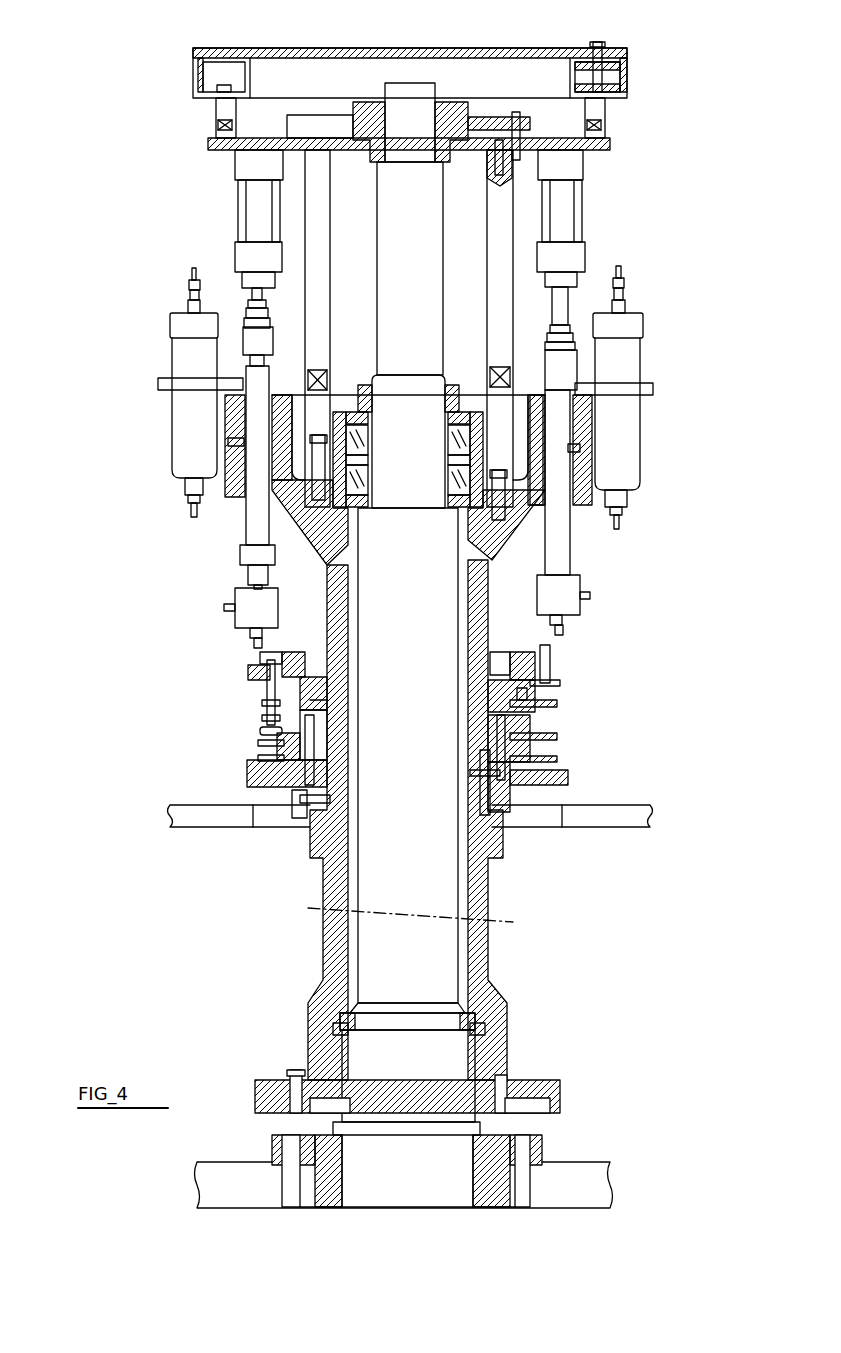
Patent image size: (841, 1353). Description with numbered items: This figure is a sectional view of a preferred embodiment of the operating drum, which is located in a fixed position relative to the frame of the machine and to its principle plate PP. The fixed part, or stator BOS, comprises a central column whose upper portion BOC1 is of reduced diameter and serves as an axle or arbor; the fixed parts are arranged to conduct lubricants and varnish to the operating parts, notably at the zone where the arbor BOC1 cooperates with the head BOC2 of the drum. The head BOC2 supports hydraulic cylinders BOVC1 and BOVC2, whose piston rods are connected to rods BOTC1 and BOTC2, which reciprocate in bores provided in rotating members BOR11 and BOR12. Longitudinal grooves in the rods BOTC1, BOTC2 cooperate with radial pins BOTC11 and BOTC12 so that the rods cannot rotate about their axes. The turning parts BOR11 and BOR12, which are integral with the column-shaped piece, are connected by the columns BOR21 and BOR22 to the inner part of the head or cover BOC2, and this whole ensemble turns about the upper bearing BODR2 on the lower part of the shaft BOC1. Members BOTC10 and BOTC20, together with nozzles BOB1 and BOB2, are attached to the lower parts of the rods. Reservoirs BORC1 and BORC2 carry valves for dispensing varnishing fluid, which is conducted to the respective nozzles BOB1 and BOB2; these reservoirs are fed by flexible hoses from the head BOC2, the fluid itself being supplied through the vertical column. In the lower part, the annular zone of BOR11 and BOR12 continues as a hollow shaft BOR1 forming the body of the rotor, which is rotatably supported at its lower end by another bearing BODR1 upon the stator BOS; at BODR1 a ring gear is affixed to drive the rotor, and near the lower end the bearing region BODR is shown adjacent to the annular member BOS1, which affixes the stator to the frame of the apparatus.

The head BOC2 is at (340, 70).
The upper portion of central column BOC1 is at (430, 237).
The hydraulic cylinder BOVC1 is at (257, 208).
The hydraulic cylinder BOVC2 is at (560, 203).
The column BOR21 is at (190, 293).
The column BOR22 is at (608, 305).
The reservoir BORC1 is at (182, 327).
The reservoir BORC2 is at (620, 362).
The radial pin BOTC11 is at (232, 442).
The radial pin BOTC12 is at (577, 448).
The rod BOTC1 is at (258, 475).
The rod BOTC2 is at (557, 515).
The upper bearing BODR2 is at (467, 442).
The rotating member BOR11 is at (285, 488).
The rotating member BOR12 is at (463, 475).
The member BOTC10 is at (255, 557).
The member BOTC20 is at (563, 558).
The nozzle BOB1 is at (250, 623).
The nozzle BOB2 is at (570, 640).
The hollow shaft BOR1 is at (335, 628).
The principle plate PP is at (628, 820).
The stator BOS is at (440, 948).
The lower bearing BODR1 is at (485, 1043).
The bearing flange BODR is at (535, 1090).
The annular member BOS1 is at (537, 1150).